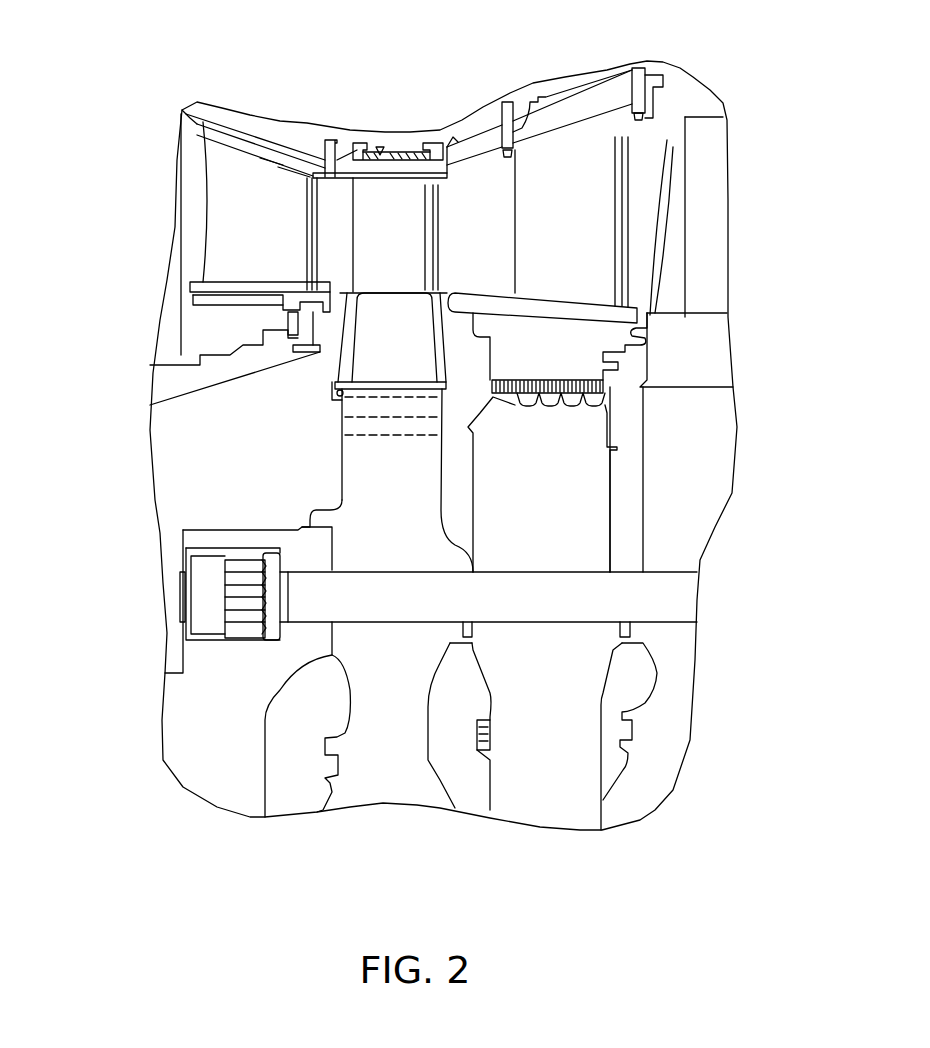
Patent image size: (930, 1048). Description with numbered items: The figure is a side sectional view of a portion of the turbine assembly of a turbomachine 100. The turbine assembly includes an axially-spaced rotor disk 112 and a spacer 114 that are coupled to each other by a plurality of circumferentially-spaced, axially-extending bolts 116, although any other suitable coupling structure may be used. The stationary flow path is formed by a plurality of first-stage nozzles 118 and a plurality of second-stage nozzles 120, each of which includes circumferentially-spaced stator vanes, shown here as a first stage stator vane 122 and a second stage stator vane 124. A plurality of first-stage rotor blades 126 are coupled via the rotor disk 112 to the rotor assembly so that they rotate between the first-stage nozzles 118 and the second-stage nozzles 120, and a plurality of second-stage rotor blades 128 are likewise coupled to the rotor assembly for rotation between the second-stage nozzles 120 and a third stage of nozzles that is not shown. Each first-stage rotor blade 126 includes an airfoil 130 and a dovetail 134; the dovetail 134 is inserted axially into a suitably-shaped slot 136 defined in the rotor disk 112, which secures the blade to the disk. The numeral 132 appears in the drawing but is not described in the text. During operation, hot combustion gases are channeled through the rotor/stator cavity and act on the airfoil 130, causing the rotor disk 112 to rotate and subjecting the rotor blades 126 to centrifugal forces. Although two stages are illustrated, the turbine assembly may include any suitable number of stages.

The turbomachine 100 is at (325, 60).
The rotor disk 112 is at (388, 792).
The spacer 114 is at (550, 808).
The bolt 116 is at (680, 600).
The first-stage nozzle 118 is at (223, 197).
The second-stage nozzle 120 is at (568, 165).
The first stage stator vane 122 is at (283, 240).
The second stage stator vane 124 is at (586, 239).
The first-stage rotor blade 126 is at (403, 192).
The second-stage rotor blade 128 is at (703, 117).
The airfoil 130 is at (411, 245).
The blade root 132 is at (411, 352).
The dovetail 134 is at (363, 427).
The slot 136 is at (327, 416).